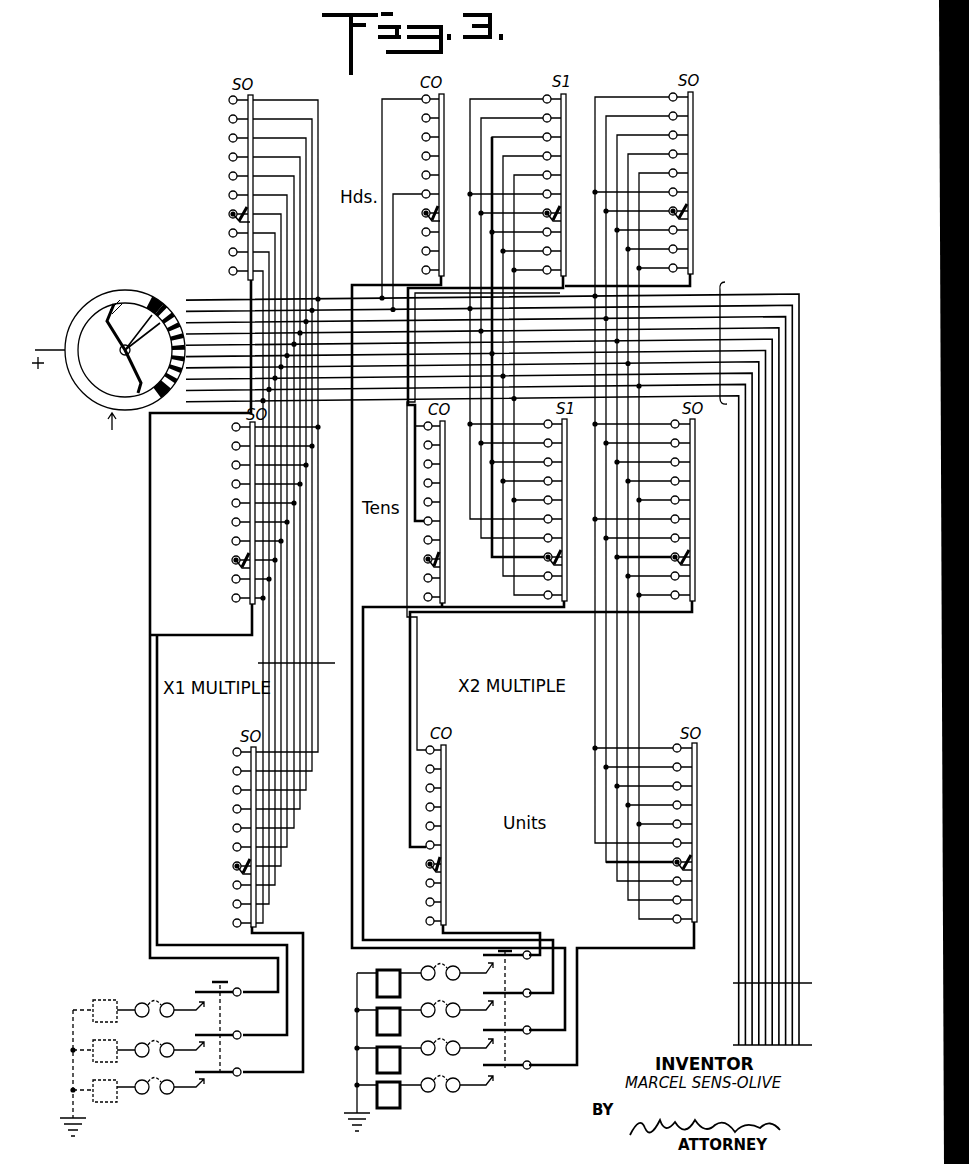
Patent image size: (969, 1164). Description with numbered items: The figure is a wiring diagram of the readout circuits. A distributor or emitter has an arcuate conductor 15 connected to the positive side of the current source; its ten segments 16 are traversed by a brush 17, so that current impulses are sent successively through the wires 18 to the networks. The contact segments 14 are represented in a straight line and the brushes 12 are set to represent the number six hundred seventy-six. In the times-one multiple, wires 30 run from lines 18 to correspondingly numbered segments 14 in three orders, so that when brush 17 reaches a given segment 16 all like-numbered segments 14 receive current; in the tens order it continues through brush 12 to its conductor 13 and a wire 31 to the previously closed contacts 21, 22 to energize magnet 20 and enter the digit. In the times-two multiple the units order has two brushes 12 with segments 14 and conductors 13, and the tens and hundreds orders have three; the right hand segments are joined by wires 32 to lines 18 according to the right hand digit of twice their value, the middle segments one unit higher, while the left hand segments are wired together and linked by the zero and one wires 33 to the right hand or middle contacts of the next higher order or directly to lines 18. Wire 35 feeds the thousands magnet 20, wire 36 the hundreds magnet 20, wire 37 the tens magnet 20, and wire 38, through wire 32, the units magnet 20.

The brush 12 is at (459, 548).
The conductor 13 is at (464, 500).
The contact segments 14 is at (459, 495).
The arcuate conductor 15 is at (119, 373).
The segments 16 is at (142, 338).
The brush 17 is at (109, 346).
The wires 18 is at (499, 656).
The magnet 20 is at (217, 1053).
The contacts 21 is at (366, 1013).
The contacts 22 is at (305, 1028).
The wires 30 is at (291, 511).
The wire 31 is at (226, 676).
The wires 32 is at (632, 508).
The wire 33 is at (530, 473).
The wire 35 is at (439, 653).
The wire 36 is at (463, 797).
The wire 37 is at (498, 917).
The wire 38 is at (611, 985).